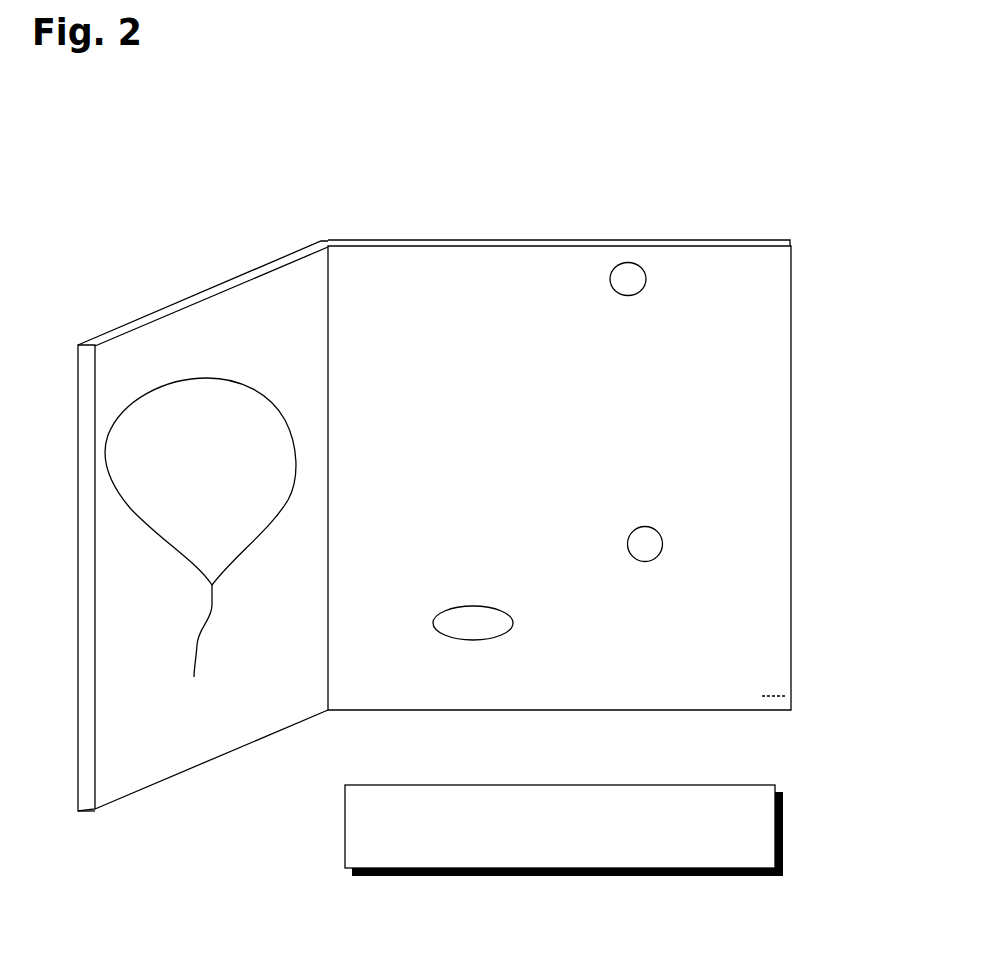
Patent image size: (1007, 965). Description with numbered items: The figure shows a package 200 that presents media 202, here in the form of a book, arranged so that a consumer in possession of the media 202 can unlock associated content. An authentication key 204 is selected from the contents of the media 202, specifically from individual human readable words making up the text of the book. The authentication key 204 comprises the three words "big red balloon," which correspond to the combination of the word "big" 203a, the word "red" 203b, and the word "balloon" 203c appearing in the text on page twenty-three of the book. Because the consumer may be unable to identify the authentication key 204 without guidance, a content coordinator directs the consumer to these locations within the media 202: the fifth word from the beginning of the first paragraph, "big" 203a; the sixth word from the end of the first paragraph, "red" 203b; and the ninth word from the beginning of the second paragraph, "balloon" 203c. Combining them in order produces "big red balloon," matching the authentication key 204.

The package 200 is at (748, 102).
The media 202 is at (212, 760).
The word "big" 203a is at (622, 264).
The word "red" 203b is at (667, 550).
The word "balloon" 203c is at (435, 617).
The authentication key 204 is at (613, 877).